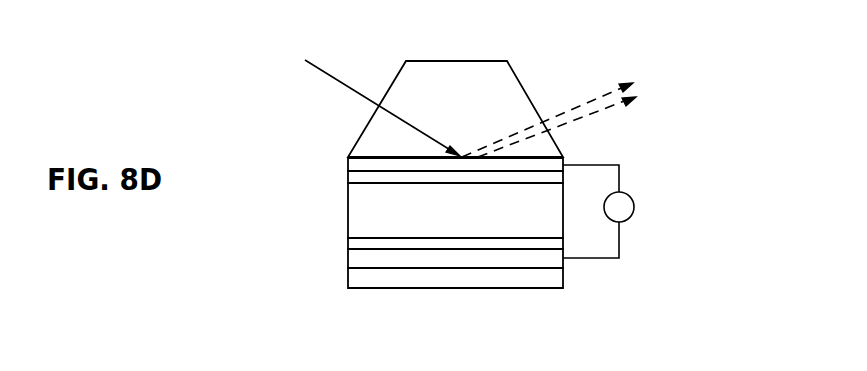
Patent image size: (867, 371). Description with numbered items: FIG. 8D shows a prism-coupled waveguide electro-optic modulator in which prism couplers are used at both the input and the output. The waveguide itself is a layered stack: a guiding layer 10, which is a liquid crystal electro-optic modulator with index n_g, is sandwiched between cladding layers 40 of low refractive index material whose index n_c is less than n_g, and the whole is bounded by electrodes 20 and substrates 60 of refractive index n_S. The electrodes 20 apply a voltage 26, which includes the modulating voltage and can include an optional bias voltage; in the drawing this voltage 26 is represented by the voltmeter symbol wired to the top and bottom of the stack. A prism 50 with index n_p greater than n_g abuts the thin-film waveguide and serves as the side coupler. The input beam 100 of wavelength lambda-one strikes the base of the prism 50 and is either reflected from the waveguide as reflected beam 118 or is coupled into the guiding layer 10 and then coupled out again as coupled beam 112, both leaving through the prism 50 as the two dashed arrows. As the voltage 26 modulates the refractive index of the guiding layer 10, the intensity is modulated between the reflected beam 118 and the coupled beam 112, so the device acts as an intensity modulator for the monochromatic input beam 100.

The guiding layer 10 is at (348, 217).
The electrodes 20 is at (348, 165).
The cladding layers 40 is at (348, 176).
The prism 50 is at (473, 60).
The substrates 60 is at (463, 288).
The voltage 26 is at (634, 205).
The input beam 100 is at (337, 80).
The coupled beam 112 is at (608, 105).
The reflected beam 118 is at (592, 98).